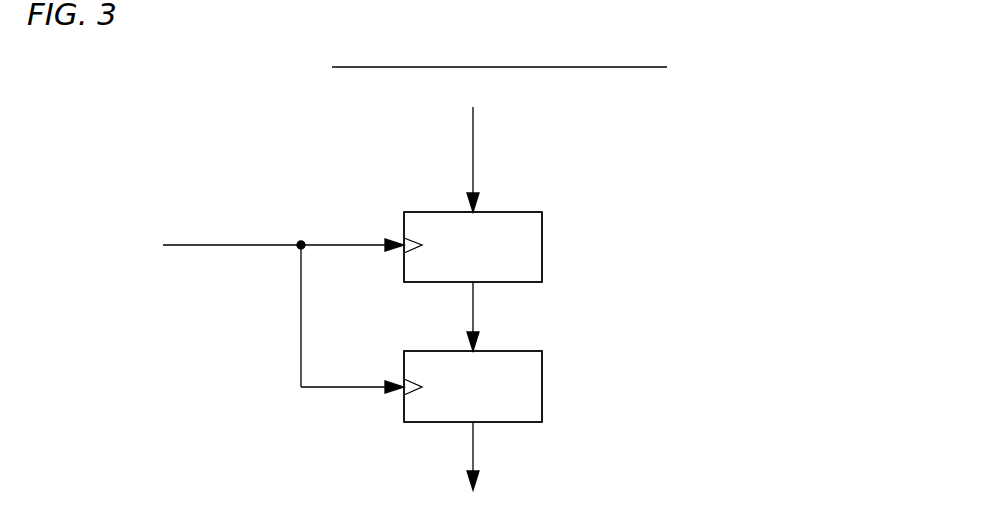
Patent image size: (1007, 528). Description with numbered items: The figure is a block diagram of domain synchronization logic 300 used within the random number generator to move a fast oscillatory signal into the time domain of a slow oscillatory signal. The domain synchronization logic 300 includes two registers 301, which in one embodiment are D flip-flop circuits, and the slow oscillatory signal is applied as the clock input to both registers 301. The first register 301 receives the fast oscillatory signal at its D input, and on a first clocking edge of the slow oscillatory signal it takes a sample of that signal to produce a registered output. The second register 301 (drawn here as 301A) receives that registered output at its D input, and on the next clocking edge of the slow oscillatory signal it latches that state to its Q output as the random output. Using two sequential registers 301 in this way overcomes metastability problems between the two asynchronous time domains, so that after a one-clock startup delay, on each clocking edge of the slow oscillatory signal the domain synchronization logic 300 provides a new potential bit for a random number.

The domain synchronization logic 300 is at (752, 73).
The register 301 is at (525, 212).
The flip-flop register (second stage; labeled 301 in source) 301A is at (440, 351).